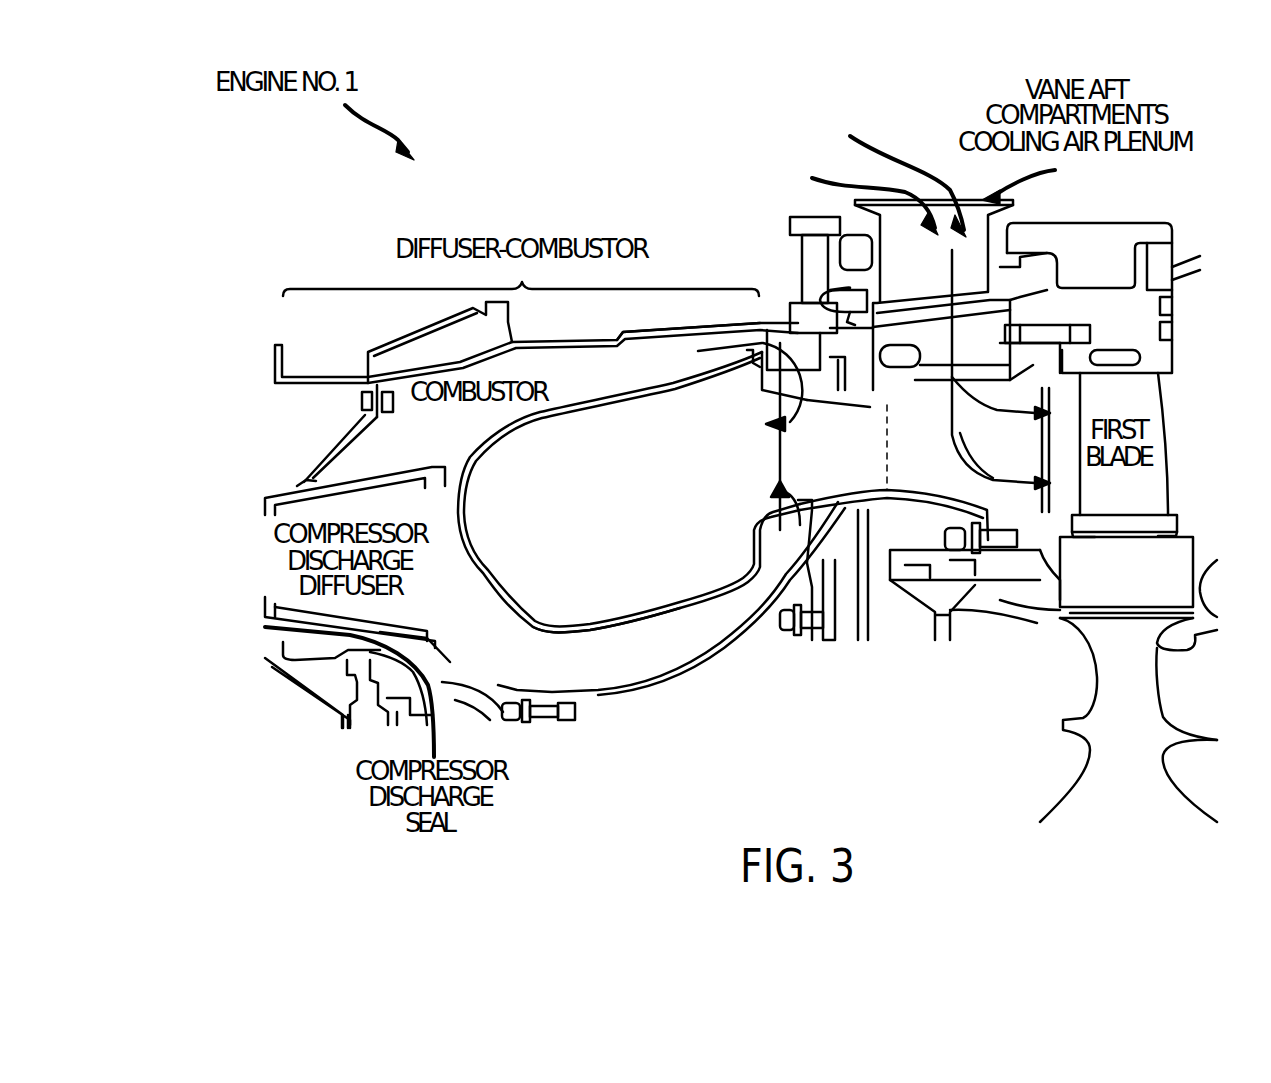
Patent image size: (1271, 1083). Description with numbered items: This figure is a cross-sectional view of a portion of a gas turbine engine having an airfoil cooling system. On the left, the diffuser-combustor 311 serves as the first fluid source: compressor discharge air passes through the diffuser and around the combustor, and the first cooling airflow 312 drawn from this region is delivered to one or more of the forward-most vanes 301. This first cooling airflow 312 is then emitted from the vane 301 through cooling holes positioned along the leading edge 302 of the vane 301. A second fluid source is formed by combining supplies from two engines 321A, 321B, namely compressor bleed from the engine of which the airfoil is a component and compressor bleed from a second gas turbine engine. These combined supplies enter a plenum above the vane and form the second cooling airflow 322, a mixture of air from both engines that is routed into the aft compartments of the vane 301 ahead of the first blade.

The diffuser-combustor 311 is at (392, 248).
The first cooling airflow 312 is at (717, 332).
The engine supply 321A is at (580, 150).
The engine supply 321B is at (620, 107).
The leading edge 302 is at (778, 447).
The vane 301 is at (903, 463).
The second cooling airflow 322 is at (1028, 420).